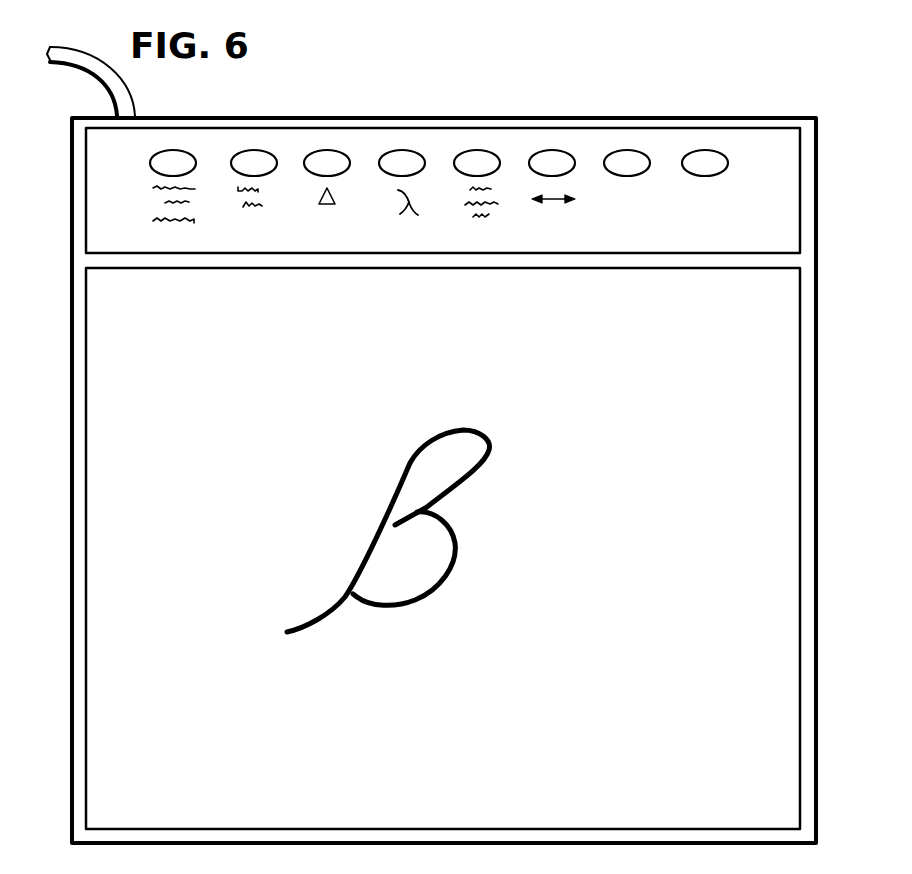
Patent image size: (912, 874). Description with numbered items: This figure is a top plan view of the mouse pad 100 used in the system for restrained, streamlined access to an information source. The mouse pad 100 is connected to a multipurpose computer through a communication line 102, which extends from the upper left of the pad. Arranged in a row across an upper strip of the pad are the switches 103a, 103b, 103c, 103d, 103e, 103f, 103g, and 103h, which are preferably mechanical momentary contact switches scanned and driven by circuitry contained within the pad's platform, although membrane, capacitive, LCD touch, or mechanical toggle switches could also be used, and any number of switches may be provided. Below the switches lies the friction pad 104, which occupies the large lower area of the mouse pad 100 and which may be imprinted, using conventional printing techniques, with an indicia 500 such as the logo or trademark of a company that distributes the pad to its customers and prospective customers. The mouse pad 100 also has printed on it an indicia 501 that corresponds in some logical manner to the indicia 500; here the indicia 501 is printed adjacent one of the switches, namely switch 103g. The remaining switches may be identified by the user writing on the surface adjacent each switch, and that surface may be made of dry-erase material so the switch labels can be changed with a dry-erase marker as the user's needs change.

The mouse pad 100 is at (70, 321).
The communication line 102 is at (90, 77).
The switch 103a is at (172, 157).
The switch 103b is at (254, 157).
The switch 103c is at (333, 157).
The switch 103d is at (405, 157).
The switch 103e is at (479, 157).
The switch 103f is at (545, 157).
The switch 103g is at (627, 157).
The switch 103h is at (705, 155).
The friction pad 104 is at (113, 465).
The indicia 500 is at (512, 442).
The indicia 501 is at (640, 212).